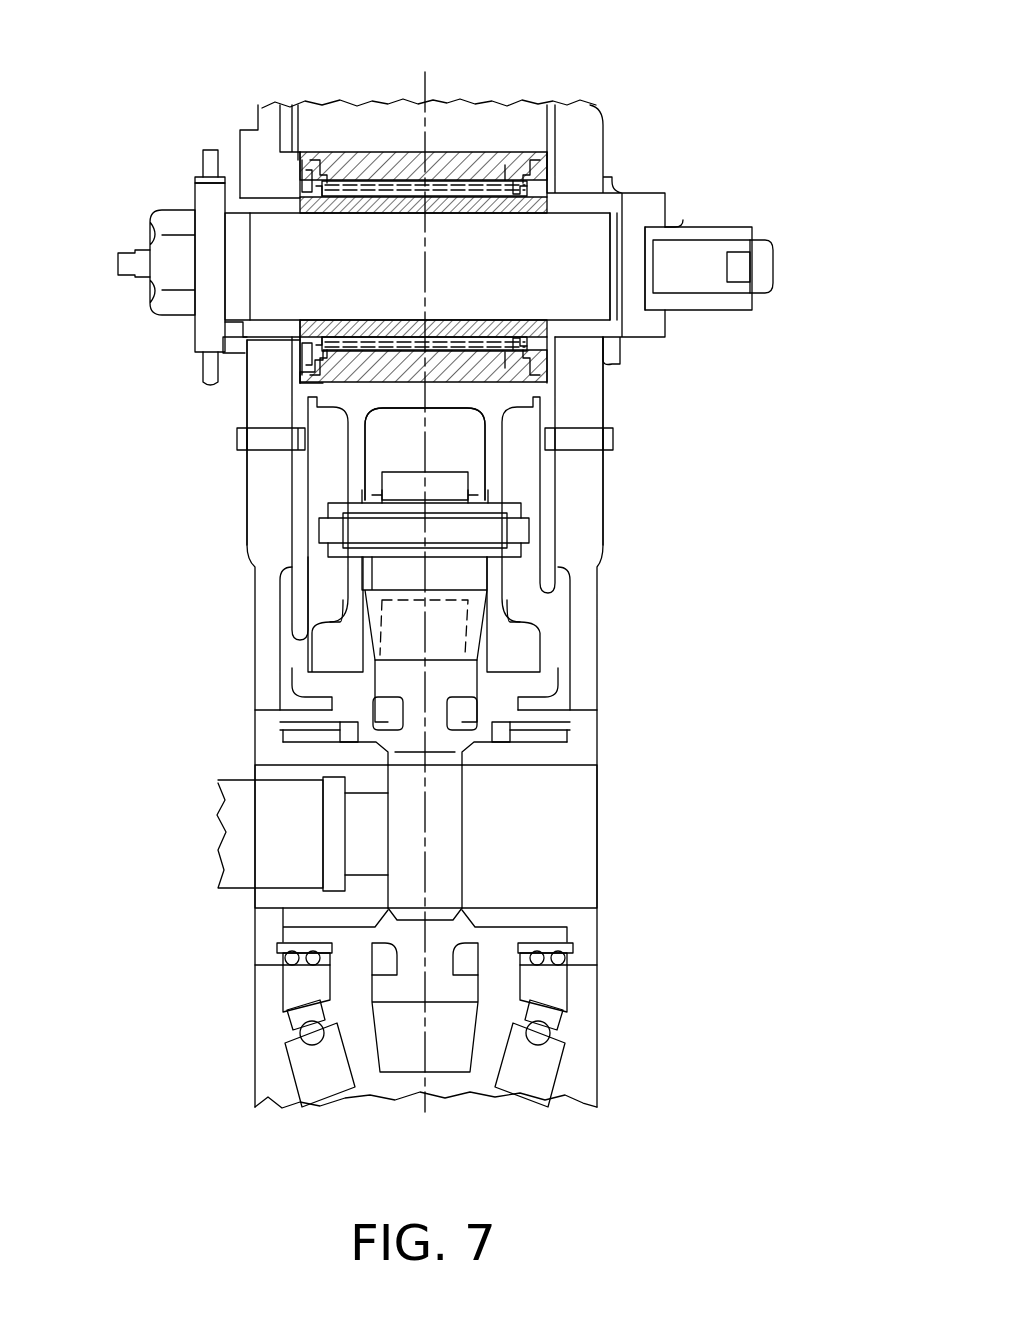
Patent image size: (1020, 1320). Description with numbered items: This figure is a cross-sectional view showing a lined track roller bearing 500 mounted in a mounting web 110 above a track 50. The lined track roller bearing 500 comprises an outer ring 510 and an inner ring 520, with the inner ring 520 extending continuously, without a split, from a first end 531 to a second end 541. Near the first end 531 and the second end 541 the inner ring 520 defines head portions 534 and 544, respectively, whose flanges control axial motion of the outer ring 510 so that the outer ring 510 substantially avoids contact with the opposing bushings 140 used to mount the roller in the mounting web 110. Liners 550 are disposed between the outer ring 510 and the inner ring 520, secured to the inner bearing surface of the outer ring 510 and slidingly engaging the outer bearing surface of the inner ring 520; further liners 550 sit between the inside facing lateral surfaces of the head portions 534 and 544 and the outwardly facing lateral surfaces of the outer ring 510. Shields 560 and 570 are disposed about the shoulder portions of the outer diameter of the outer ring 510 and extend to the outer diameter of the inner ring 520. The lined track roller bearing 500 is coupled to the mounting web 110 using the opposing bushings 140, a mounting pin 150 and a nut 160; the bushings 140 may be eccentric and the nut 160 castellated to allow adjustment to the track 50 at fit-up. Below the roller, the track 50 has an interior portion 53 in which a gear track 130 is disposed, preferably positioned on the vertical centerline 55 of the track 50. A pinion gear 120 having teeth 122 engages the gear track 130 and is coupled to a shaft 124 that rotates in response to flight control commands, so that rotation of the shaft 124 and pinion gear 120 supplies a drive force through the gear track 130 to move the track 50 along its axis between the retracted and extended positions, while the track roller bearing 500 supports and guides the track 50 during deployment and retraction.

The track 50 is at (372, 478).
The interior portion 53 is at (474, 456).
The vertical centerline 55 is at (418, 1085).
The mounting web 110 is at (605, 395).
The pinion gear 120 is at (375, 683).
The teeth 122 is at (468, 612).
The shaft 124 is at (585, 808).
The gear track 130 is at (395, 472).
The opposing bushings 140 is at (240, 165).
The mounting pin 150 is at (240, 290).
The nut 160 is at (690, 227).
The lined track roller bearing 500 is at (505, 128).
The outer ring 510 is at (375, 152).
The inner ring 520 is at (352, 207).
The first end 531 is at (318, 346).
The head portion 534 is at (298, 135).
The second end 541 is at (530, 188).
The head portion 544 is at (548, 170).
The liner 550 is at (325, 185).
The shield 560 is at (308, 170).
The shield 570 is at (553, 165).